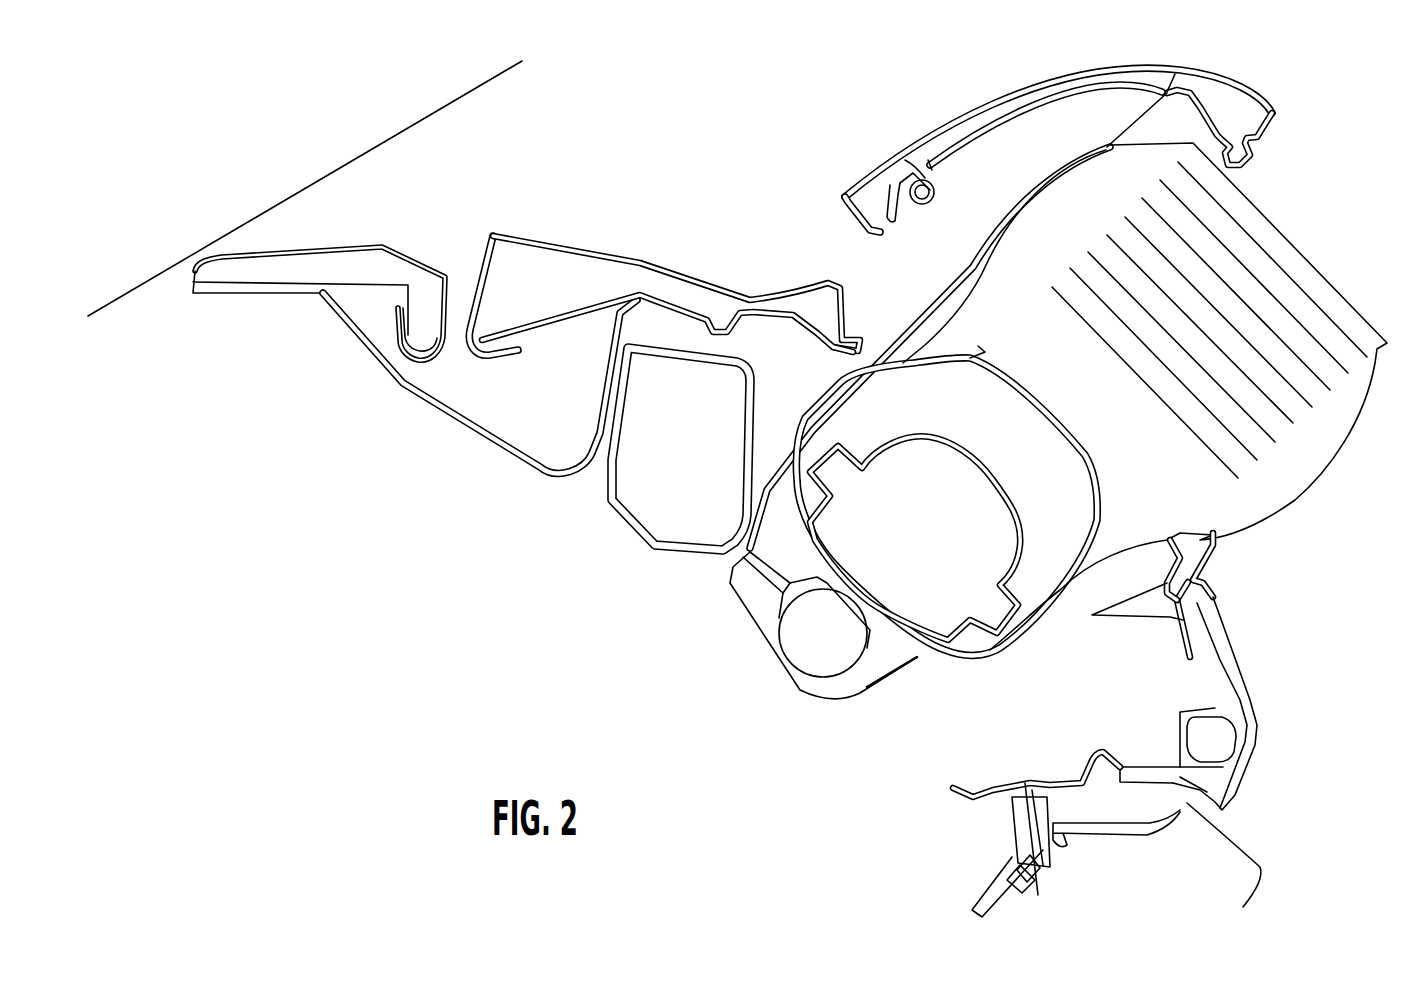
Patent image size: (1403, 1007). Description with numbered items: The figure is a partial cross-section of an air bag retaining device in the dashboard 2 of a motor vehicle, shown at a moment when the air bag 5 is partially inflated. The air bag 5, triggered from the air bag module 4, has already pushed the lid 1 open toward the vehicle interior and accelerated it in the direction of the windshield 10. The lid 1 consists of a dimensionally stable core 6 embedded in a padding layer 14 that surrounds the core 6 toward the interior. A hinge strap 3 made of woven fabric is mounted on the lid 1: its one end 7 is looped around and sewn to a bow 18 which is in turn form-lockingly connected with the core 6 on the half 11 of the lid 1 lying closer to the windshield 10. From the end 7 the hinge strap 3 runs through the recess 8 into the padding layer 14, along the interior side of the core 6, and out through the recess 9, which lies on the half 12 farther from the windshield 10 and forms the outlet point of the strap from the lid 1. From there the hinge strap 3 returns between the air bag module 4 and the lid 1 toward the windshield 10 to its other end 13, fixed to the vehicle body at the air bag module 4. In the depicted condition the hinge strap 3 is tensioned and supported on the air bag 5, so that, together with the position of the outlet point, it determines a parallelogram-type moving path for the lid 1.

The lid 1 is at (1225, 108).
The dashboard 2 is at (1250, 733).
The hinge strap 3 is at (937, 300).
The air bag module 4 is at (938, 658).
The air bag 5 is at (1298, 490).
The dimensionally stable core 6 is at (1028, 118).
The end of hinge strap 7 is at (908, 198).
The recess 8 is at (915, 160).
The recess 9 is at (1175, 74).
The windshield 10 is at (396, 136).
The half of the lid 11 is at (862, 180).
The half of the lid 12 is at (1268, 100).
The other end of hinge strap 13 is at (793, 503).
The padding layer 14 is at (985, 112).
The bow 18 is at (934, 190).